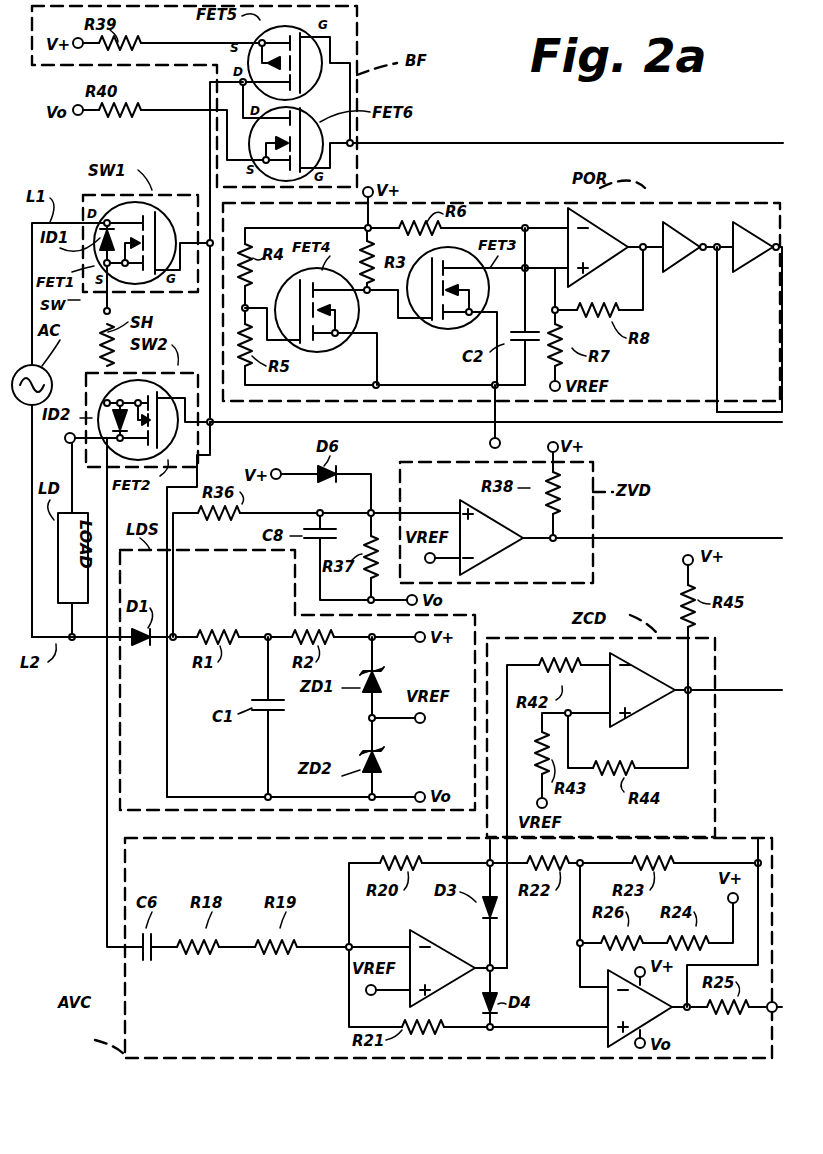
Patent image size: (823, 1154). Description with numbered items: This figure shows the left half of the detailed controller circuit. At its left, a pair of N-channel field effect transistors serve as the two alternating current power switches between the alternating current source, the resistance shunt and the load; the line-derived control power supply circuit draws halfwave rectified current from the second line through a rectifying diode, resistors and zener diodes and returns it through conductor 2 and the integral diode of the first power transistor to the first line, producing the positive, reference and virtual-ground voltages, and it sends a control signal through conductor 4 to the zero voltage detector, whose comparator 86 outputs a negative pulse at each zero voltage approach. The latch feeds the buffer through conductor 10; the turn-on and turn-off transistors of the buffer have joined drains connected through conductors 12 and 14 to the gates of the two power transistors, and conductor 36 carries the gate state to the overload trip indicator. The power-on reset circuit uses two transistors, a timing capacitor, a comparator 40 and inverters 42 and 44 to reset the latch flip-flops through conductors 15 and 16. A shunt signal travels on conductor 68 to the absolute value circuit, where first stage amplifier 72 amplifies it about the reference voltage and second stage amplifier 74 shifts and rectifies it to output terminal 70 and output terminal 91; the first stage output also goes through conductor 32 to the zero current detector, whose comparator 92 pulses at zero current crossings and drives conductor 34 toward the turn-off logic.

The conductor 2 is at (200, 466).
The conductor 4 is at (176, 546).
The conductor 10 is at (666, 142).
The conductor 12 is at (205, 200).
The conductor 14 is at (212, 424).
The conductor 15 is at (780, 248).
The conductor 16 is at (718, 353).
The conductor 32 is at (508, 652).
The conductor 34 is at (758, 692).
The conductor 36 is at (652, 422).
The comparator 40 is at (594, 224).
The inverter 42 is at (694, 240).
The inverter 44 is at (766, 238).
The conductor 68 is at (104, 786).
The output terminal 70 is at (768, 1014).
The first stage amplifier 72 is at (450, 944).
The second stage amplifier 74 is at (606, 1004).
The comparator 86 is at (506, 554).
The output terminal 91 is at (758, 840).
The comparator 92 is at (640, 674).